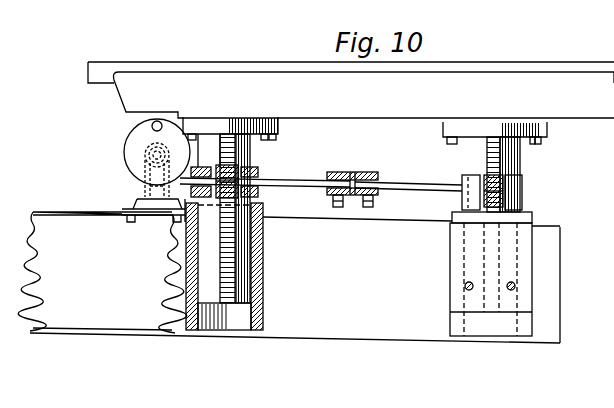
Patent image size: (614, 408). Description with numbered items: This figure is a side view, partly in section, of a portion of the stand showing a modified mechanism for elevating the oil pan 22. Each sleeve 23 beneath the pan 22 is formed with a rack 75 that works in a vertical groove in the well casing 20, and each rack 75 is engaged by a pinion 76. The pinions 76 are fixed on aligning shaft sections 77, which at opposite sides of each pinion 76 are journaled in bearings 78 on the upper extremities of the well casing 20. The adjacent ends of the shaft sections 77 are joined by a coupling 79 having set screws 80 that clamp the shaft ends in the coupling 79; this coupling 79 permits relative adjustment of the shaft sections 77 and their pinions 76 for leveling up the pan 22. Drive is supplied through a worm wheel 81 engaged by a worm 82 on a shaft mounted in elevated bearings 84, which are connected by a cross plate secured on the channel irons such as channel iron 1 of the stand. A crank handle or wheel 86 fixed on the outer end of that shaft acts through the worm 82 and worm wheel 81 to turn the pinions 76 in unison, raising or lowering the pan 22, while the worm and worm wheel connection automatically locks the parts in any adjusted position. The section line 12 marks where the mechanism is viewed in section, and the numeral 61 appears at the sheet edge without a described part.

The channel iron 1 is at (381, 334).
The section line 12 is at (197, 104).
The well casing 20 is at (263, 286).
The pan 22 is at (489, 88).
The sleeve 23 is at (247, 155).
The fragment 61 is at (9, 399).
The rack 75 is at (222, 281).
The pinion 76 is at (259, 195).
The shaft section 77 is at (308, 180).
The bearing 78 is at (463, 197).
The coupling 79 is at (355, 172).
The set screw 80 is at (368, 208).
The worm wheel 81 is at (146, 217).
The worm 82 is at (145, 152).
The elevated bearing 84 is at (140, 193).
The crank handle or wheel 86 is at (129, 136).